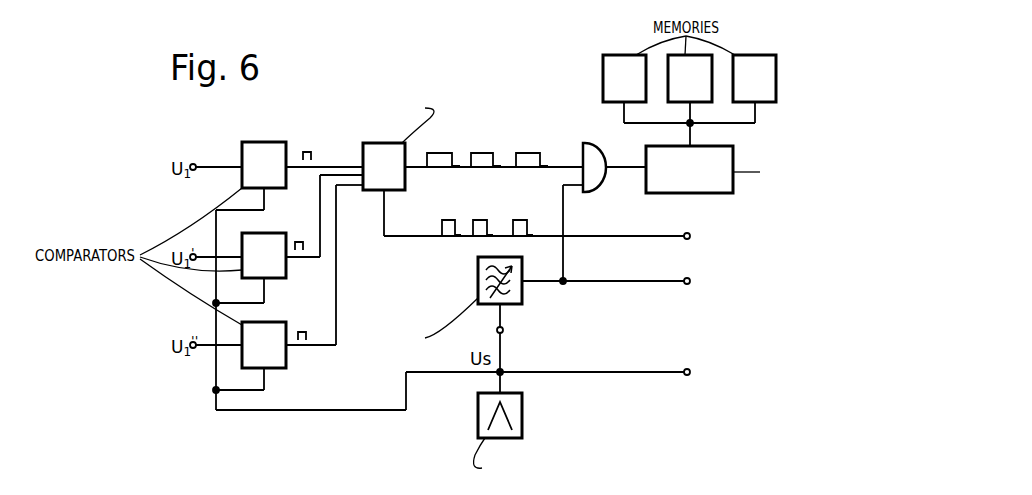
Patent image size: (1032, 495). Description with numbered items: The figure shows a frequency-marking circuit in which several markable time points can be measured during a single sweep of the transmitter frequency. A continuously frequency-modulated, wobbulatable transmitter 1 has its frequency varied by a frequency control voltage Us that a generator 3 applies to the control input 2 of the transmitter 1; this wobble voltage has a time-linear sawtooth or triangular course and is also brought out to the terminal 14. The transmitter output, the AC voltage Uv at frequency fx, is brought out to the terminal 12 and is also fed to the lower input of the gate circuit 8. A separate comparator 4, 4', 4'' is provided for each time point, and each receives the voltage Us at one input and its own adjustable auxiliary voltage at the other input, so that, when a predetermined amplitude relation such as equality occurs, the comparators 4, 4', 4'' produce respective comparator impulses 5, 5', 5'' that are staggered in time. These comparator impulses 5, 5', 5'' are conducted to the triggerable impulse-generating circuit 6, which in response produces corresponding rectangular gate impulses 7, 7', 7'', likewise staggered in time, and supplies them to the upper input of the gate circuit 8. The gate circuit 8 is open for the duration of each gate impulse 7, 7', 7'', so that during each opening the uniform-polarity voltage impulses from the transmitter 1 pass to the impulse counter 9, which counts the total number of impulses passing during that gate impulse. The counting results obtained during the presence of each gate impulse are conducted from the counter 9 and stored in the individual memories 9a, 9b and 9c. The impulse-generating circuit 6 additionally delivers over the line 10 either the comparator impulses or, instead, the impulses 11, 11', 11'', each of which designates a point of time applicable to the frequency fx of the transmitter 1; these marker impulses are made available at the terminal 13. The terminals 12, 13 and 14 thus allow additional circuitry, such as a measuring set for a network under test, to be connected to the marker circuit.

The frequency-modulated transmitter 1 is at (478, 277).
The control input 2 is at (508, 333).
The generator 3 is at (512, 410).
The comparator 4 is at (264, 165).
The comparator 4' is at (264, 255).
The comparator 4'' is at (264, 345).
The comparator impulse 5 is at (314, 154).
The comparator impulse 5' is at (308, 244).
The comparator impulse 5'' is at (313, 334).
The impulse-generating circuit 6 is at (417, 135).
The gate impulse 7 is at (443, 146).
The gate impulse 7' is at (486, 146).
The gate impulse 7'' is at (532, 146).
The gate circuit 8 is at (598, 164).
The impulse counter 9 is at (735, 169).
The memory 9a is at (624, 78).
The memory 9b is at (690, 78).
The memory 9c is at (754, 78).
The line 10 is at (410, 238).
The impulse 11 is at (459, 224).
The impulse 11' is at (493, 224).
The impulse 11'' is at (536, 224).
The terminal 12 is at (702, 283).
The terminal 13 is at (702, 239).
The terminal 14 is at (702, 375).